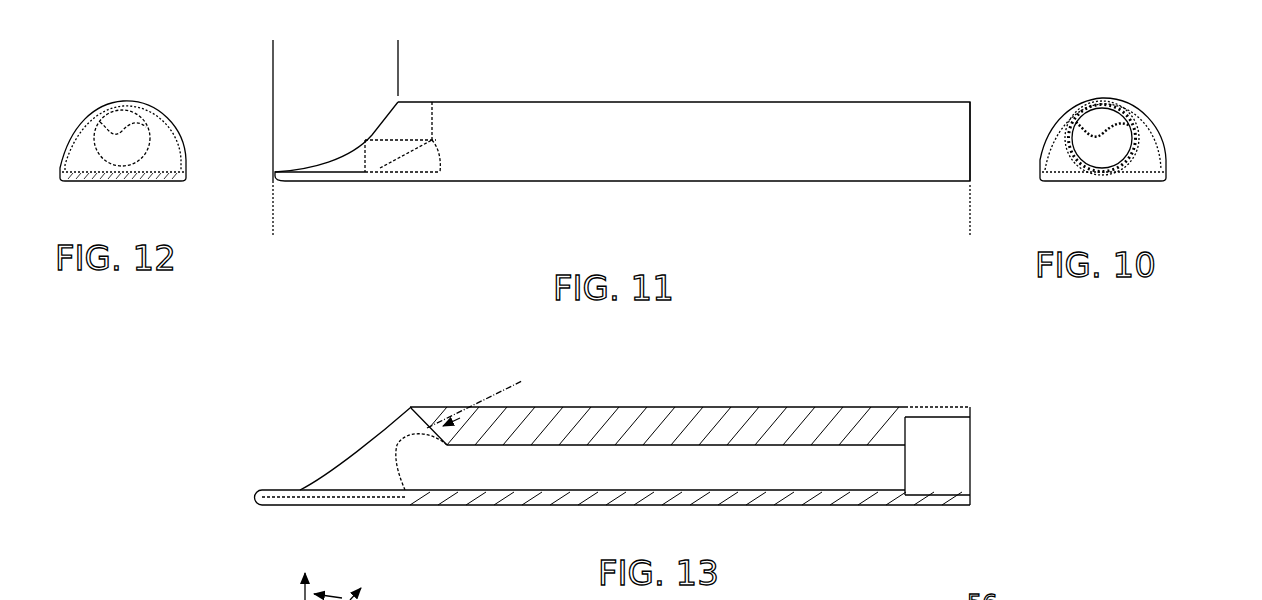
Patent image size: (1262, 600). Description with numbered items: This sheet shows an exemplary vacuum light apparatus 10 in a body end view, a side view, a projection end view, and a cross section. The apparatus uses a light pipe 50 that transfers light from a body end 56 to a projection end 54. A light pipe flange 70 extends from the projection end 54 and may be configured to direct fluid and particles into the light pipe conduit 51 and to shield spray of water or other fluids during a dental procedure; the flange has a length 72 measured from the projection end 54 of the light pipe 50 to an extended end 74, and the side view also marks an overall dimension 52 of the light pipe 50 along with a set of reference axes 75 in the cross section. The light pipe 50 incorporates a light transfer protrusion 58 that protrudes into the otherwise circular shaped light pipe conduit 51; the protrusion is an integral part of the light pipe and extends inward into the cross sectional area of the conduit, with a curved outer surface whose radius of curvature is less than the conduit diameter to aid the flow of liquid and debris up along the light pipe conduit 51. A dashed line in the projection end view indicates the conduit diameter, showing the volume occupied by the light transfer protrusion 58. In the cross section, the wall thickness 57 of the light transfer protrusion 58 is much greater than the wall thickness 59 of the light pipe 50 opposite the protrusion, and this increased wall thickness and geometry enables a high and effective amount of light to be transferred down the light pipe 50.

In FIG. 11, the vacuum light apparatus 10 is at (785, 74).
In FIG. 10, the vacuum light apparatus 10 is at (1177, 86).
In FIG. 13, the vacuum light apparatus 10 is at (877, 391).
In FIG. 12, the light pipe 50 is at (135, 97).
In FIG. 11, the light pipe 50 is at (734, 113).
In FIG. 10, the light pipe 50 is at (1124, 98).
In FIG. 13, the light pipe 50 is at (700, 418).
In FIG. 12, the light pipe conduit 51 is at (126, 153).
In FIG. 10, the light pipe conduit 51 is at (1110, 148).
In FIG. 11, the overall length 52 is at (277, 221).
In FIG. 11, the projection end 54 is at (381, 126).
In FIG. 13, the projection end 54 is at (388, 430).
In FIG. 11, the body end 56 is at (970, 116).
In FIG. 13, the body end 56 is at (974, 415).
In FIG. 13, the wall thickness 57 is at (637, 470).
In FIG. 12, the light transfer protrusion 58 is at (122, 123).
In FIG. 10, the light transfer protrusion 58 is at (1105, 117).
In FIG. 13, the light transfer protrusion 58 is at (790, 425).
In FIG. 13, the wall thickness 59 is at (515, 457).
In FIG. 11, the light pipe flange 70 is at (292, 172).
In FIG. 13, the light pipe flange 70 is at (295, 490).
In FIG. 11, the length 72 is at (395, 52).
In FIG. 11, the extended end 74 is at (275, 172).
In FIG. 13, the coordinate axes 75 is at (335, 583).